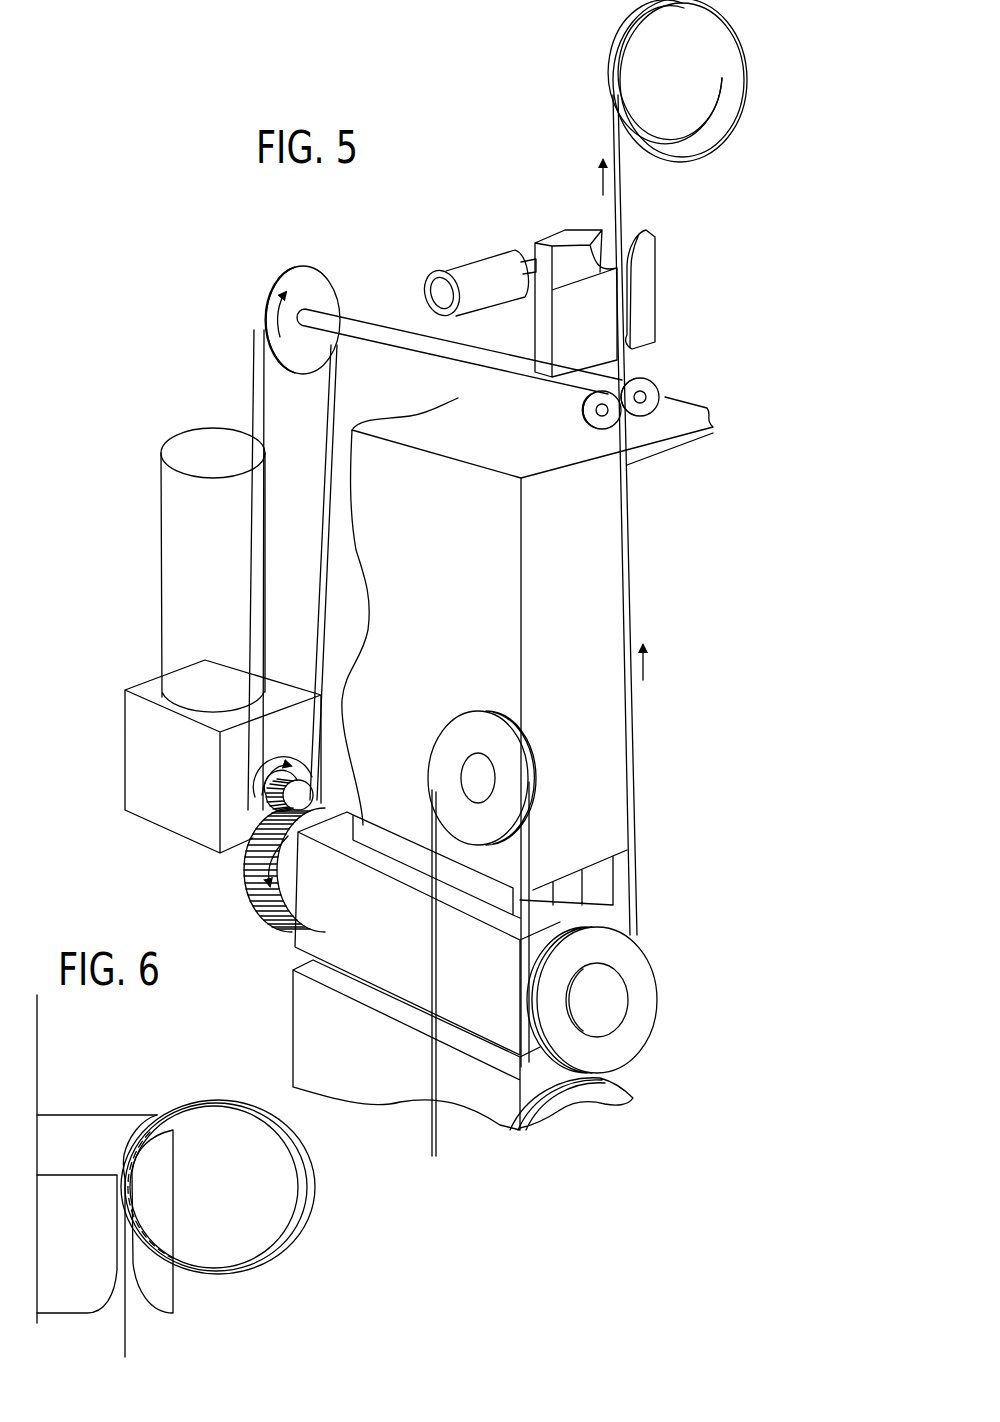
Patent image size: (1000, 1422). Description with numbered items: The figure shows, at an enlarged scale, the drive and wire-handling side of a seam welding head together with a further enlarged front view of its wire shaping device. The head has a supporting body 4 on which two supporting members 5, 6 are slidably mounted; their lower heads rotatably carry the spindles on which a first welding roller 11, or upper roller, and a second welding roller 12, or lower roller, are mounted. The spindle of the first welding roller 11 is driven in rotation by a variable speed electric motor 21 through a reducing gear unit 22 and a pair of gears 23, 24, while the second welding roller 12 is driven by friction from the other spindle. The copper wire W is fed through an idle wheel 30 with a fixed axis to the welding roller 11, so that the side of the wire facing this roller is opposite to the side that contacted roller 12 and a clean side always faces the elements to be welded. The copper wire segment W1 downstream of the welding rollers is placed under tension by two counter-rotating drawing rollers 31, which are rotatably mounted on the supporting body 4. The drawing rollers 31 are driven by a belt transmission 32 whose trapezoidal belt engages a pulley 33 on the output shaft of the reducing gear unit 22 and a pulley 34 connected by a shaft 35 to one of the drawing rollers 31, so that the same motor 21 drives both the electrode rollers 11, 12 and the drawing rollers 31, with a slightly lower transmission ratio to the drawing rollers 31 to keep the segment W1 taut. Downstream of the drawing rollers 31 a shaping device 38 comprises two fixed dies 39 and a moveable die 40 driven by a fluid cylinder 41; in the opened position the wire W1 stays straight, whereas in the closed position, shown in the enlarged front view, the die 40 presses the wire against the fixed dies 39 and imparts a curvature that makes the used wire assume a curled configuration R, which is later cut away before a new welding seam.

In FIG. 5, the supporting body 4 is at (381, 370).
In FIG. 5, the supporting member 5 is at (313, 925).
In FIG. 5, the supporting member 6 is at (322, 1002).
In FIG. 5, the first welding roller 11 is at (637, 952).
In FIG. 5, the second welding roller 12 is at (605, 1092).
In FIG. 5, the variable speed electric motor 21 is at (190, 532).
In FIG. 5, the reducing gear unit 22 is at (155, 740).
In FIG. 5, the gear 23 is at (305, 797).
In FIG. 5, the gear 24 is at (272, 895).
In FIG. 5, the idle wheel 30 is at (482, 735).
In FIG. 5, the drawing rollers 31 is at (648, 403).
In FIG. 5, the belt transmission 32 is at (250, 368).
In FIG. 5, the pulley 33 is at (265, 806).
In FIG. 5, the pulley 34 is at (305, 268).
In FIG. 5, the shaft 35 is at (466, 358).
In FIG. 5, the shaping device 38 is at (690, 346).
In FIG. 5, the fixed dies 39 is at (620, 300).
In FIG. 6, the fixed dies 39 is at (97, 1228).
In FIG. 5, the moveable die 40 is at (572, 250).
In FIG. 6, the moveable die 40 is at (78, 1122).
In FIG. 5, the fluid cylinder 41 is at (484, 268).
In FIG. 5, the curled configuration R is at (727, 138).
In FIG. 6, the curled configuration R is at (300, 1215).
In FIG. 5, the copper wire W is at (432, 950).
In FIG. 5, the copper wire segment W1 is at (622, 170).